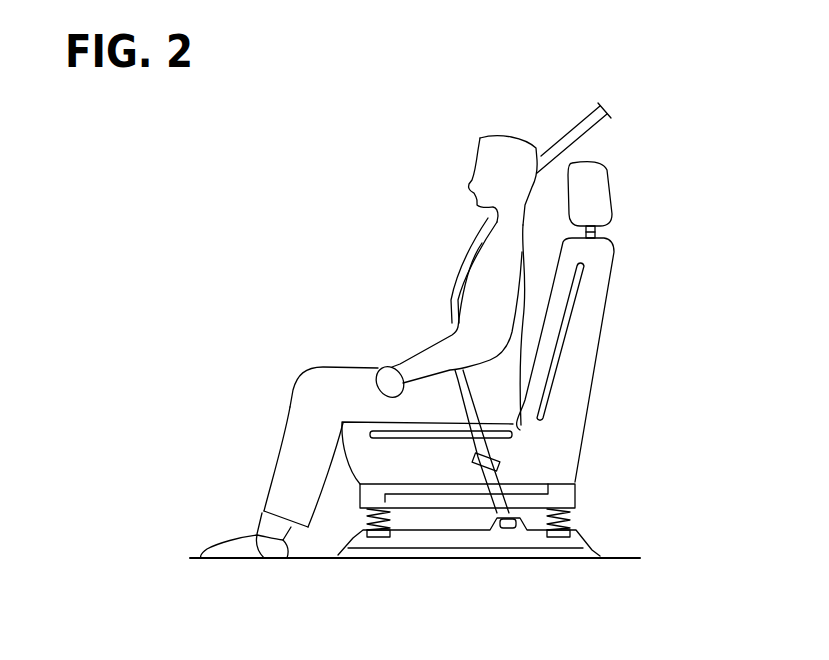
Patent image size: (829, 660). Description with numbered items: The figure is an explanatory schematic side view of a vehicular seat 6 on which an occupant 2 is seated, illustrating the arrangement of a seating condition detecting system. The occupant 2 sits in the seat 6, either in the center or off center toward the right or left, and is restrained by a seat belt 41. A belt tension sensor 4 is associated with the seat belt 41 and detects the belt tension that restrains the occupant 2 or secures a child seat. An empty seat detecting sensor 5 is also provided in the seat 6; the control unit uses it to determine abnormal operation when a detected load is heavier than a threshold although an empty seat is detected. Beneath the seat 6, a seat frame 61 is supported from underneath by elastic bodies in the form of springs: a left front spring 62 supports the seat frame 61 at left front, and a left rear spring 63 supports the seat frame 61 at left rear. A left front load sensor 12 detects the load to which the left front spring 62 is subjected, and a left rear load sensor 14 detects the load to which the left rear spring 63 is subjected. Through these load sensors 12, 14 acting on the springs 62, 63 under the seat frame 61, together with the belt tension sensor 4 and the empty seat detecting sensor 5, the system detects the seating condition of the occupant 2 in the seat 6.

The occupant 2 is at (535, 235).
The belt tension sensor 4 is at (500, 457).
The empty seat detecting sensor 5 is at (453, 431).
The seat 6 is at (622, 277).
The left front load sensor 12 is at (377, 537).
The left rear load sensor 14 is at (558, 537).
The seat belt 41 is at (582, 127).
The seat frame 61 is at (570, 495).
The left front spring 62 is at (387, 522).
The left rear spring 63 is at (567, 517).